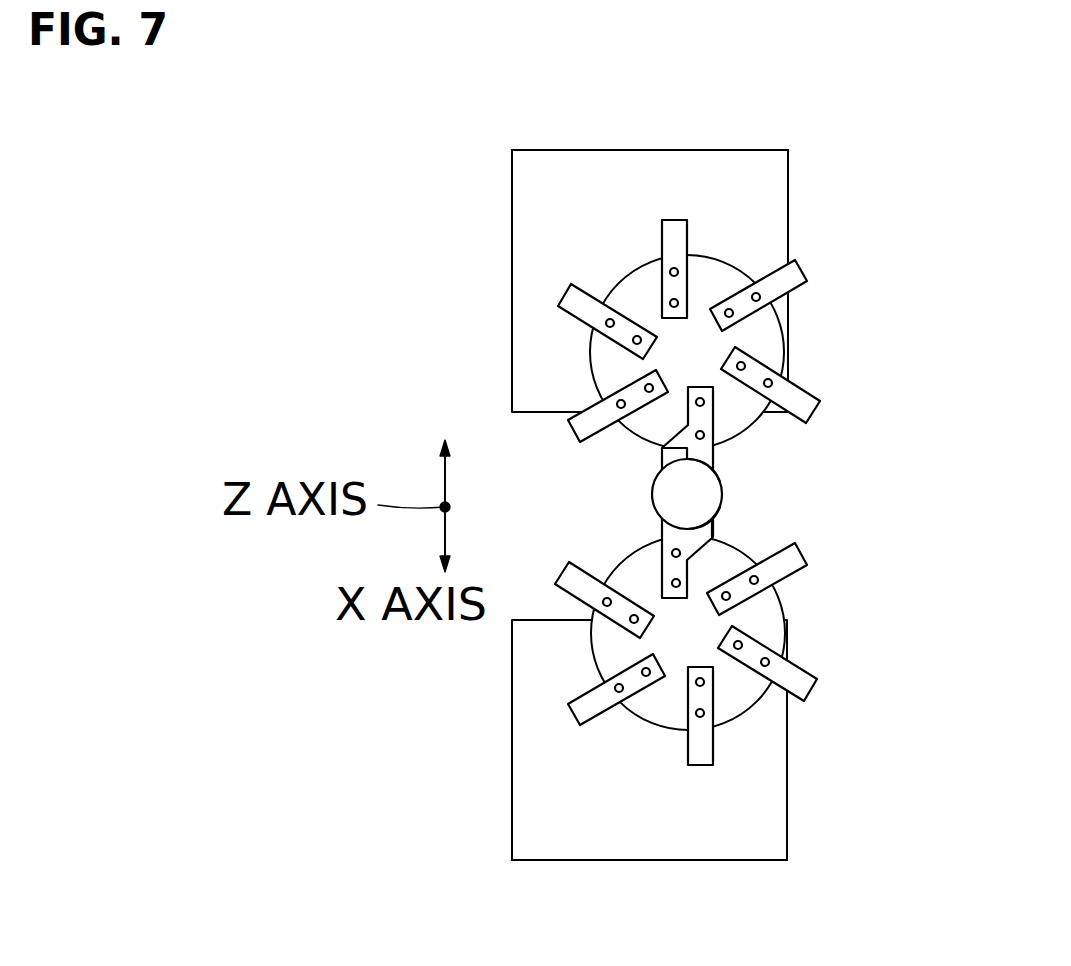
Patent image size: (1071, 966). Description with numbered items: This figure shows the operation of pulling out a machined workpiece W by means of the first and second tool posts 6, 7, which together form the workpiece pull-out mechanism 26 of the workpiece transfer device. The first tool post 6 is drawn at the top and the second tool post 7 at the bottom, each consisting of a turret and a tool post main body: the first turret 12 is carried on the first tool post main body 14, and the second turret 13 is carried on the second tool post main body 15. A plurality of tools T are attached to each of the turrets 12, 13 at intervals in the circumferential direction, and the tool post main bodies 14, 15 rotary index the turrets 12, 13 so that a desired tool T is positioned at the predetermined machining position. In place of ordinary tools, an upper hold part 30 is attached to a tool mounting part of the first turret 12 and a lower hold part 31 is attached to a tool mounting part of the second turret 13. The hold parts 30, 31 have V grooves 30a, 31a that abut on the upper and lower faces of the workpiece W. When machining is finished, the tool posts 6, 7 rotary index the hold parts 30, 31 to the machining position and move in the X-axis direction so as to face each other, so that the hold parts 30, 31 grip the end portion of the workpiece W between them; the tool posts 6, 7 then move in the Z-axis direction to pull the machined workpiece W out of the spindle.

The first tool post 6 is at (795, 178).
The second tool post 7 is at (797, 778).
The first turret 12 is at (643, 263).
The second turret 13 is at (647, 725).
The first tool post main body 14 is at (550, 150).
The second tool post main body 15 is at (655, 860).
The workpiece pull-out mechanism 26 is at (785, 446).
The upper hold part 30 is at (663, 445).
The V groove 30a is at (718, 483).
The lower hold part 31 is at (660, 583).
The V groove 31a is at (720, 508).
The machined workpiece W is at (720, 498).
The tool T is at (577, 407).